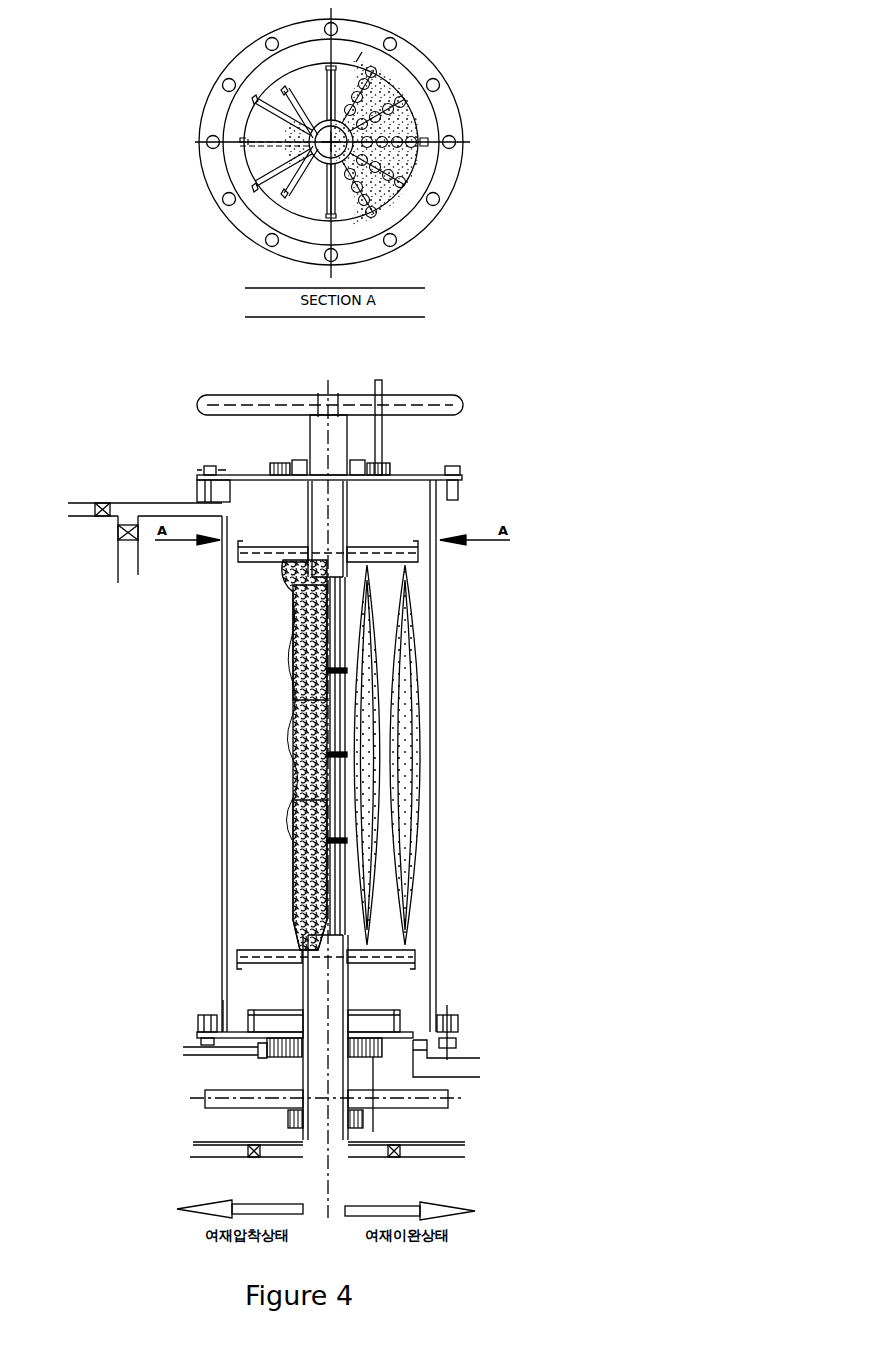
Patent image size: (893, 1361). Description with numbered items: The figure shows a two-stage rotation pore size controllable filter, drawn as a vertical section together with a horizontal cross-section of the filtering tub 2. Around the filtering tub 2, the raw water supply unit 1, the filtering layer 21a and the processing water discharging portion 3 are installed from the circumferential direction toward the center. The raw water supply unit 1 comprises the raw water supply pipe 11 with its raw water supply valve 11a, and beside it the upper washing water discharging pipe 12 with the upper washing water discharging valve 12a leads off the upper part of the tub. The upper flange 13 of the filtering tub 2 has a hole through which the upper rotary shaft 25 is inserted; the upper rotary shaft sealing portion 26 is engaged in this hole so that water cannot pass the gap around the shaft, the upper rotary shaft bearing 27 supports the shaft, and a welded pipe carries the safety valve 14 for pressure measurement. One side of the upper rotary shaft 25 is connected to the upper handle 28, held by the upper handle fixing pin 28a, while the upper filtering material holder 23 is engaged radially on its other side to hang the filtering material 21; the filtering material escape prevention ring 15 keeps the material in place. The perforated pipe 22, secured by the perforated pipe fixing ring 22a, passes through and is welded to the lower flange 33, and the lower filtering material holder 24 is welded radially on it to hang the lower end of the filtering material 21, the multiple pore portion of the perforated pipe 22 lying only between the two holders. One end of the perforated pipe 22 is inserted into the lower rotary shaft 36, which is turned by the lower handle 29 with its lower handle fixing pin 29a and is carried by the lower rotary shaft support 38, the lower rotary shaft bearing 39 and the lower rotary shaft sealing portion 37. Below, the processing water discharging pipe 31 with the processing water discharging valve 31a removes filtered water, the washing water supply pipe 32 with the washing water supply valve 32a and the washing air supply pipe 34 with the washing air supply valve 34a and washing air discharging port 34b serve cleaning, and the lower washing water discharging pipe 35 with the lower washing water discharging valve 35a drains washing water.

The raw water supply unit 1 is at (200, 475).
The filtering tub 2 is at (225, 120).
The processing water discharging portion 3 is at (330, 1143).
The raw water supply pipe 11 is at (125, 567).
The raw water supply valve 11a is at (121, 541).
The upper washing water discharging pipe 12 is at (80, 518).
The upper washing water discharging valve 12a is at (97, 503).
The upper flange 13 is at (430, 476).
The safety valve 14 is at (252, 472).
The filtering material escape prevention ring 15 is at (360, 60).
The filtering material 21 is at (407, 110).
The filtering layer 21a is at (278, 96).
The perforated pipe 22 is at (285, 184).
The perforated pipe fixing ring 22a is at (272, 178).
The upper filtering material holder 23 is at (422, 143).
The lower filtering material holder 24 is at (413, 948).
The upper rotary shaft 25 is at (290, 112).
The upper rotary shaft sealing portion 26 is at (365, 470).
The upper rotary shaft bearing 27 is at (310, 463).
The upper handle 28 is at (273, 395).
The upper handle fixing pin 28a is at (382, 380).
The lower handle 29 is at (437, 1108).
The lower handle fixing pin 29a is at (380, 1118).
The processing water discharging pipe 31 is at (465, 1150).
The processing water discharging valve 31a is at (398, 1158).
The washing water supply pipe 32 is at (197, 1141).
The washing water supply valve 32a is at (252, 1160).
The lower flange 33 is at (222, 1012).
The washing air supply pipe 34 is at (200, 1057).
The washing air supply valve 34a is at (265, 1057).
The washing air discharging port 34b is at (257, 1010).
The lower washing water discharging pipe 35 is at (478, 1062).
The lower washing water discharging valve 35a is at (450, 1020).
The lower rotary shaft 36 is at (300, 983).
The lower rotary shaft sealing portion 37 is at (290, 1123).
The lower rotary shaft support 38 is at (295, 1012).
The lower rotary shaft bearing 39 is at (358, 1012).